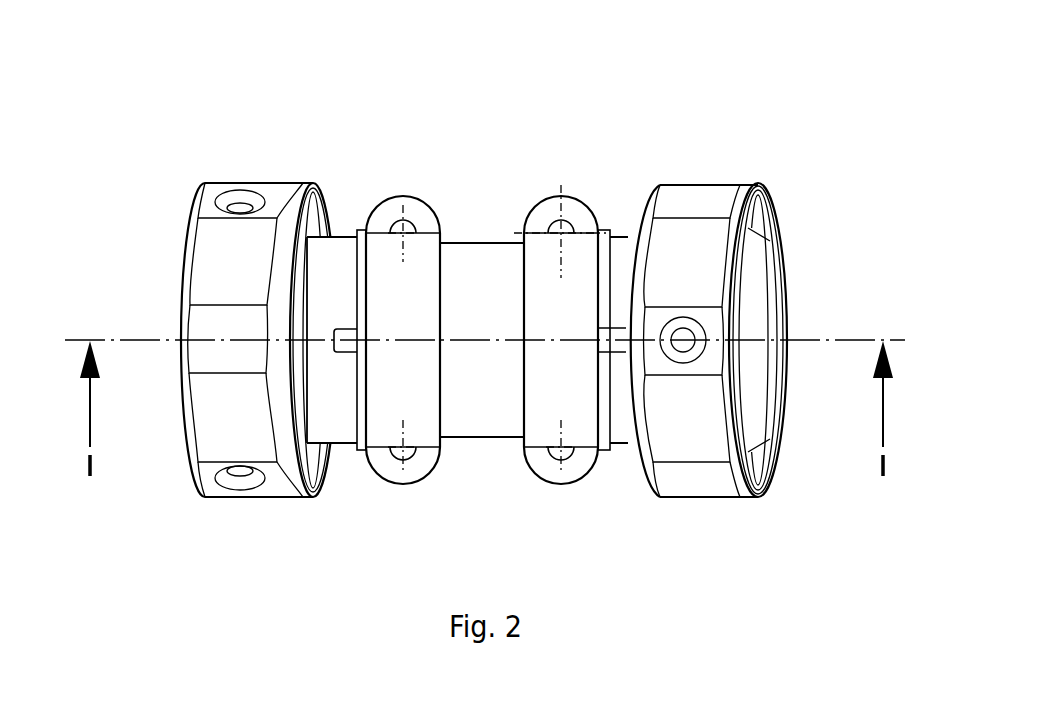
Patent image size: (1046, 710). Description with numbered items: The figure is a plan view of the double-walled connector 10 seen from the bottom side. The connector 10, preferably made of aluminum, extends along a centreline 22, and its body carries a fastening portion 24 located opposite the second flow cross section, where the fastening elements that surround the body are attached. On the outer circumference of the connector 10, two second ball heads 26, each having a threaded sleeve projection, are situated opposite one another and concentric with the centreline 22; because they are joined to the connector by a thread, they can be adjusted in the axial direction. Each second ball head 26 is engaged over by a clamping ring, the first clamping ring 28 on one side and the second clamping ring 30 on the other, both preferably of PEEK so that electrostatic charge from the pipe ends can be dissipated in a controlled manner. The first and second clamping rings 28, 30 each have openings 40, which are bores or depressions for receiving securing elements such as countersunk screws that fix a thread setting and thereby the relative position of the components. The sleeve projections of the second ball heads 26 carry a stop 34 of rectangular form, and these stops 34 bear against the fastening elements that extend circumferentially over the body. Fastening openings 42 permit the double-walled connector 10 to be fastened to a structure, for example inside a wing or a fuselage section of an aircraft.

The double-walled connector 10 is at (880, 158).
The centreline 22 is at (808, 340).
The fastening portion 24 is at (483, 231).
The second ball heads 26 is at (344, 220).
The first clamping ring 28 is at (710, 171).
The second clamping ring 30 is at (250, 172).
The stop 34 is at (360, 458).
The openings 40 is at (237, 203).
The fastening openings 42 is at (408, 224).